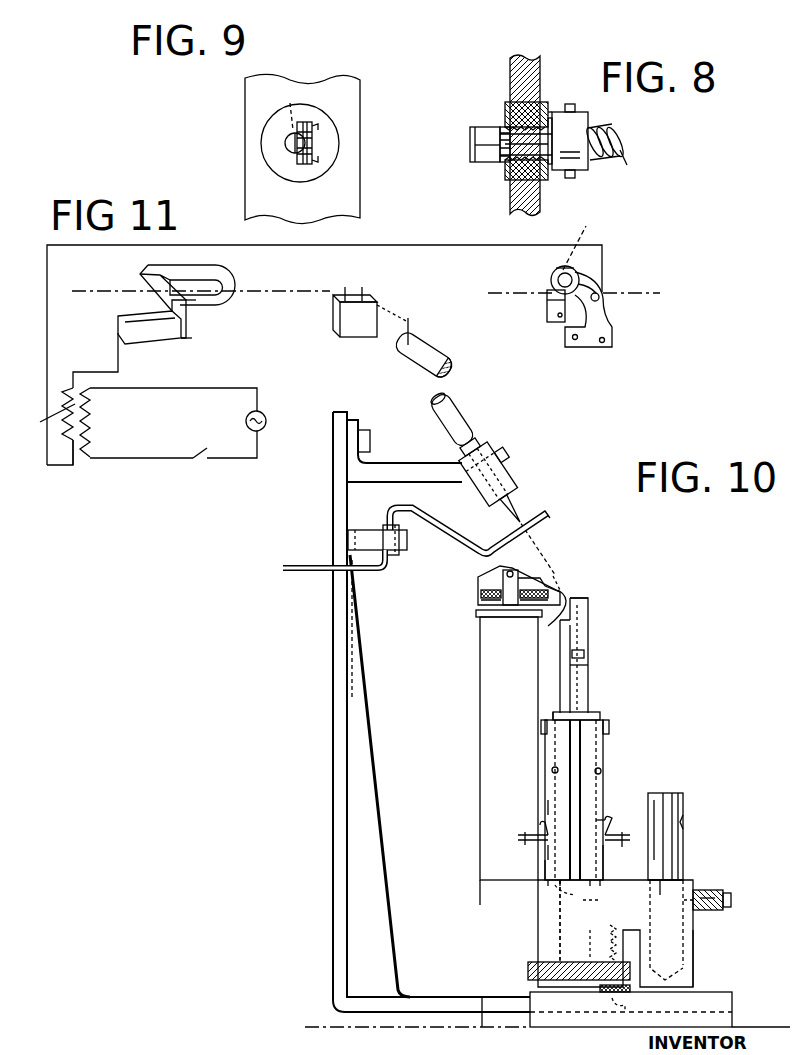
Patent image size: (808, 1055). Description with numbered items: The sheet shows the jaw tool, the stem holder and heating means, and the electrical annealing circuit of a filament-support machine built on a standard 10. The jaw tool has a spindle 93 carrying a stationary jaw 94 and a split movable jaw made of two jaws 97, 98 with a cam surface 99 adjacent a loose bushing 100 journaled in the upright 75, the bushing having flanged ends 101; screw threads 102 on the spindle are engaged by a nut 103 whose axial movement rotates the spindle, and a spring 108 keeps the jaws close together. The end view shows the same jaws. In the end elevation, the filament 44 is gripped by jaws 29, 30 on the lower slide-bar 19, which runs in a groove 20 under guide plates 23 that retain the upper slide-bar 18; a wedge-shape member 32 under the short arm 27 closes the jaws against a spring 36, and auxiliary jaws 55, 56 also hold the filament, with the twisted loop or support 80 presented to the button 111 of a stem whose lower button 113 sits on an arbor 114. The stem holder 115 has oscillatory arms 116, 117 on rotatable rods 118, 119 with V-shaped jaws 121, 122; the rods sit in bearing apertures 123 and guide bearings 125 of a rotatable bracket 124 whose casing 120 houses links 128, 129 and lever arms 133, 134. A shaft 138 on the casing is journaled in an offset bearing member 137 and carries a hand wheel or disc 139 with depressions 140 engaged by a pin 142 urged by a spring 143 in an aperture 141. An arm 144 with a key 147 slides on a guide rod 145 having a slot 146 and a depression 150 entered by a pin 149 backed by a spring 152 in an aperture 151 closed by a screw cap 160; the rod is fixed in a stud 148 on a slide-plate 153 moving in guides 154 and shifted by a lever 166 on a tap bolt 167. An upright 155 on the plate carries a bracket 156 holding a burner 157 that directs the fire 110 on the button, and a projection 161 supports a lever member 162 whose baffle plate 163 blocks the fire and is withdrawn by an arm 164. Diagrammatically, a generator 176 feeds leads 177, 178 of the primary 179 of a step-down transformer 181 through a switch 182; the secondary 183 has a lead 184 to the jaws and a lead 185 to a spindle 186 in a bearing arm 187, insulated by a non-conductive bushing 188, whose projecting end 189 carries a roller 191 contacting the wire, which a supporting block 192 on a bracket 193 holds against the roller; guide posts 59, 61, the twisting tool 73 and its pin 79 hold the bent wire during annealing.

In FIG. 10, the standard 10 is at (480, 904).
In FIG. 10, the upper slide-bar 18 is at (489, 601).
In FIG. 10, the lower slide-bar 19 is at (512, 618).
In FIG. 10, the rectangular groove 20 is at (495, 604).
In FIG. 10, the guide plates 23 is at (486, 600).
In FIG. 10, the short arm 27 is at (522, 582).
In FIG. 11, the jaw 29 is at (200, 316).
In FIG. 10, the jaw 29 is at (557, 587).
In FIG. 11, the jaw 30 is at (186, 340).
In FIG. 10, the jaw 30 is at (548, 624).
In FIG. 10, the wedge-shape member 32 is at (482, 592).
In FIG. 10, the spring 36 is at (506, 569).
In FIG. 11, the filament 44 is at (366, 283).
In FIG. 11, the auxiliary gripping jaw 55 is at (238, 300).
In FIG. 11, the auxiliary gripping jaw 56 is at (238, 285).
In FIG. 11, the guide post 59 is at (345, 287).
In FIG. 11, the guide post 61 is at (363, 286).
In FIG. 11, the rotatable tool 73 is at (449, 362).
In FIG. 9, the upright 75 is at (362, 190).
In FIG. 8, the upright 75 is at (542, 196).
In FIG. 11, the pin 79 is at (411, 322).
In FIG. 11, the twisted loop or support 80 is at (162, 299).
In FIG. 8, the spindle 93 is at (631, 168).
In FIG. 9, the stationary jaw 94 is at (293, 147).
In FIG. 8, the stationary jaw 94 is at (468, 144).
In FIG. 9, the jaw 97 is at (306, 134).
In FIG. 8, the jaw 97 is at (486, 127).
In FIG. 9, the jaw 98 is at (310, 160).
In FIG. 8, the jaw 98 is at (491, 156).
In FIG. 9, the cam surface 99 is at (313, 150).
In FIG. 8, the cam surface 99 is at (510, 140).
In FIG. 8, the bushing 100 is at (532, 112).
In FIG. 9, the flanged ends 101 is at (262, 144).
In FIG. 8, the flanged ends 101 is at (550, 106).
In FIG. 8, the screw threads 102 is at (618, 138).
In FIG. 8, the nut 103 is at (570, 141).
In FIG. 9, the spring 108 is at (287, 108).
In FIG. 10, the fire 110 is at (556, 556).
In FIG. 10, the button 111 is at (590, 590).
In FIG. 10, the lower button 113 is at (585, 666).
In FIG. 10, the arbor 114 is at (590, 658).
In FIG. 10, the stem holder 115 is at (608, 803).
In FIG. 10, the oscillatory arm 116 is at (590, 710).
In FIG. 10, the oscillatory arm 117 is at (550, 709).
In FIG. 10, the rotatable rod 118 is at (601, 773).
In FIG. 10, the rotatable rod 119 is at (552, 770).
In FIG. 10, the casing 120 is at (605, 865).
In FIG. 10, the V-shaped jaw 121 is at (589, 603).
In FIG. 10, the V-shaped jaw 122 is at (575, 625).
In FIG. 10, the bearing apertures 123 is at (595, 894).
In FIG. 10, the rotatable bracket 124 is at (547, 861).
In FIG. 10, the guide bearings 125 is at (547, 808).
In FIG. 10, the connecting link 128 is at (628, 828).
In FIG. 10, the connecting link 129 is at (525, 841).
In FIG. 10, the lever arm 133 is at (600, 821).
In FIG. 10, the lever arm 134 is at (524, 833).
In FIG. 10, the offset bearing member 137 is at (538, 940).
In FIG. 10, the shaft 138 is at (558, 912).
In FIG. 10, the hand wheel or disc 139 is at (528, 972).
In FIG. 10, the depressions 140 is at (598, 962).
In FIG. 10, the aperture 141 is at (614, 930).
In FIG. 10, the pin 142 is at (666, 930).
In FIG. 10, the spring 143 is at (600, 944).
In FIG. 10, the arm 144 is at (694, 880).
In FIG. 10, the guide rod 145 is at (683, 800).
In FIG. 10, the longitudinal slot 146 is at (662, 793).
In FIG. 10, the key 147 is at (668, 880).
In FIG. 10, the stud 148 is at (695, 952).
In FIG. 10, the pin 149 is at (715, 911).
In FIG. 10, the depression 150 is at (686, 818).
In FIG. 10, the aperture 151 is at (716, 890).
In FIG. 10, the spring 152 is at (731, 897).
In FIG. 10, the slide-plate 153 is at (445, 1000).
In FIG. 10, the guides 154 is at (530, 1000).
In FIG. 10, the upright 155 is at (333, 790).
In FIG. 10, the bracket 156 is at (407, 463).
In FIG. 10, the nozzle or burner 157 is at (512, 497).
In FIG. 10, the screw cap 160 is at (731, 903).
In FIG. 10, the projection 161 is at (366, 530).
In FIG. 10, the lever member 162 is at (455, 536).
In FIG. 10, the baffle plate 163 is at (552, 513).
In FIG. 10, the arm 164 is at (311, 572).
In FIG. 10, the lever 166 is at (605, 993).
In FIG. 10, the tap bolt 167 is at (620, 1020).
In FIG. 11, the generator 176 is at (267, 421).
In FIG. 11, the lead 177 is at (224, 389).
In FIG. 11, the lead 178 is at (178, 449).
In FIG. 11, the primary 179 is at (89, 424).
In FIG. 11, the step-down transformer 181 is at (80, 466).
In FIG. 11, the switch 182 is at (210, 462).
In FIG. 11, the secondary 183 is at (45, 418).
In FIG. 11, the lead 184 is at (119, 363).
In FIG. 11, the lead 185 is at (62, 341).
In FIG. 11, the spindle 186 is at (599, 296).
In FIG. 11, the bearing arm 187 is at (606, 318).
In FIG. 11, the non-conductive bushing 188 is at (597, 292).
In FIG. 11, the projecting end 189 is at (583, 246).
In FIG. 11, the roller 191 is at (573, 270).
In FIG. 11, the supporting block 192 is at (553, 301).
In FIG. 11, the bracket 193 is at (559, 323).